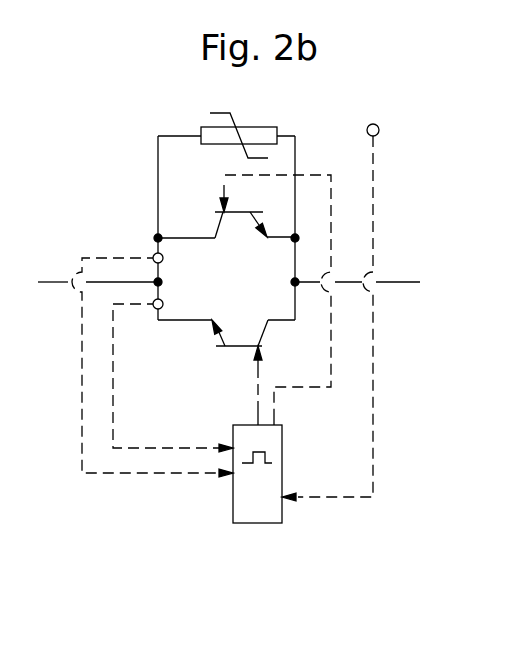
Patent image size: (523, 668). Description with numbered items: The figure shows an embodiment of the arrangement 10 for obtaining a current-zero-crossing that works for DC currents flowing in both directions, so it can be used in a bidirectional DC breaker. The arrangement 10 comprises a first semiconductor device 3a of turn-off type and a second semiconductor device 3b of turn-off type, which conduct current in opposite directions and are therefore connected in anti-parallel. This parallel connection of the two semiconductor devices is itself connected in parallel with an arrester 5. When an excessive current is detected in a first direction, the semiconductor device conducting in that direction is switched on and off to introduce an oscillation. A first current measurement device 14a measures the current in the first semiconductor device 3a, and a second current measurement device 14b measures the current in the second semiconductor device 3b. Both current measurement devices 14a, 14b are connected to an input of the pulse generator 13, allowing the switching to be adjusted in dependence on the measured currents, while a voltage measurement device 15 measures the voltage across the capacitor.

The arrangement 10 is at (413, 529).
The arrester 5 is at (260, 122).
The first semiconductor device 3a is at (243, 348).
The second semiconductor device 3b is at (234, 213).
The first current measurement device 14a is at (164, 303).
The second current measurement device 14b is at (153, 239).
The pulse generator 13 is at (283, 512).
The voltage measurement device 15 is at (378, 135).